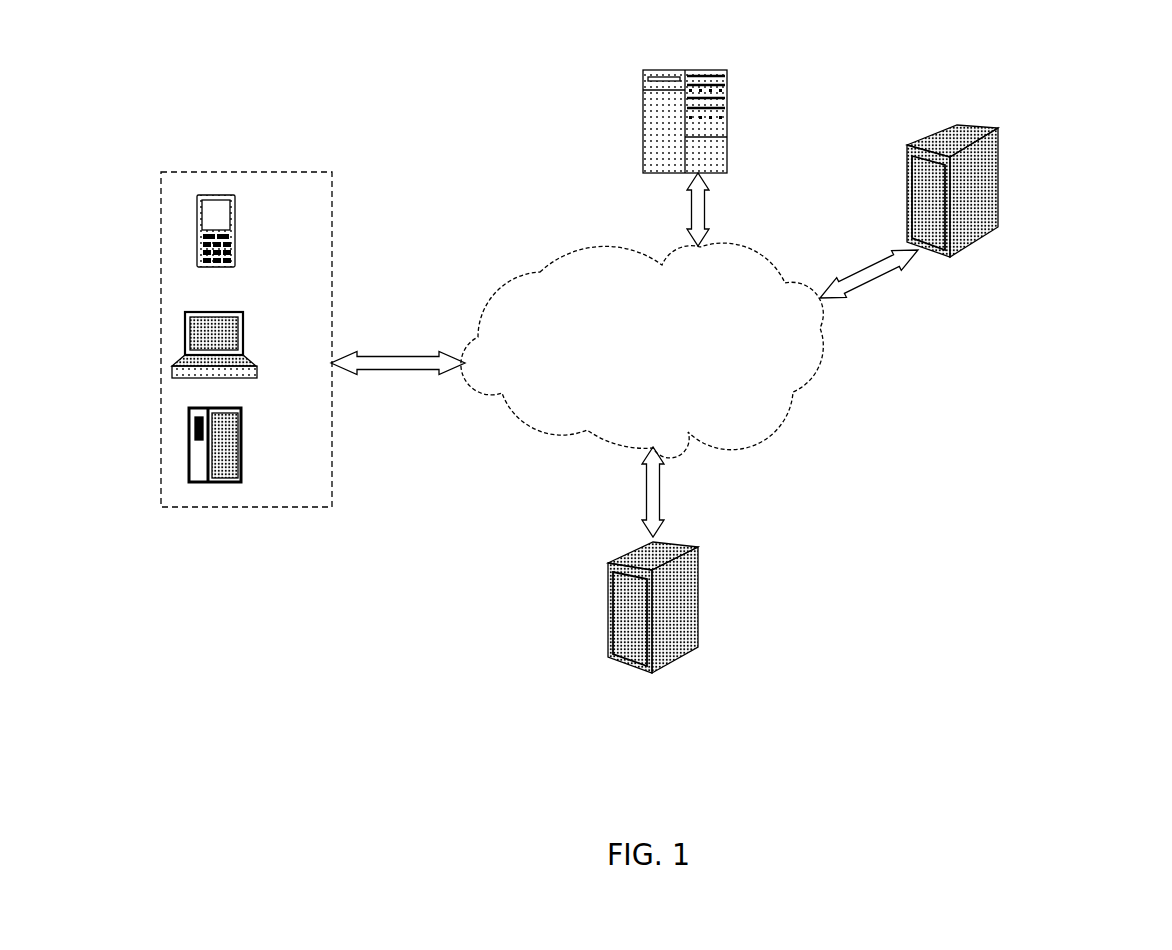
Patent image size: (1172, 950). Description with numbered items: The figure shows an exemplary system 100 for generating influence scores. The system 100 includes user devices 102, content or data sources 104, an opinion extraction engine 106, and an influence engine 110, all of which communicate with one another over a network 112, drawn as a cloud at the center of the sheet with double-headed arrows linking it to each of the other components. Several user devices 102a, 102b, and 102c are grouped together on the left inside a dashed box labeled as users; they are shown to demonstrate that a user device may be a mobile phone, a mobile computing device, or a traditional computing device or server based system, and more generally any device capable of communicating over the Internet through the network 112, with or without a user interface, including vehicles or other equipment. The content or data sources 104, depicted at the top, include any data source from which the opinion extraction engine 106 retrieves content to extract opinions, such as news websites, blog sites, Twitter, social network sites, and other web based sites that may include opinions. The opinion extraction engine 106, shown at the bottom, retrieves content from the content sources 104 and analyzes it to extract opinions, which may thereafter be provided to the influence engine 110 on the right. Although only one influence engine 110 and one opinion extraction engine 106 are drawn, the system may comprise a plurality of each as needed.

The system 100 is at (443, 54).
The user devices 102 is at (335, 295).
The user device 102a is at (240, 242).
The user device 102b is at (243, 333).
The user device 102c is at (245, 443).
The content or data sources 104 is at (723, 68).
The opinion extraction engine 106 is at (700, 562).
The influence engine 110 is at (962, 128).
The network 112 is at (745, 248).